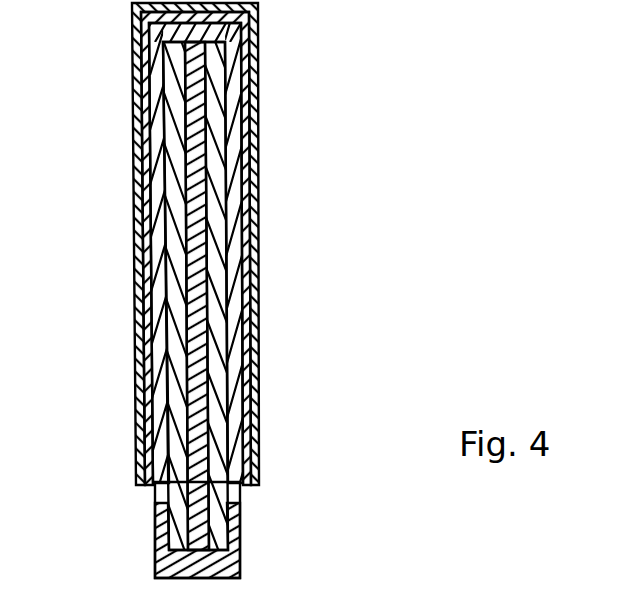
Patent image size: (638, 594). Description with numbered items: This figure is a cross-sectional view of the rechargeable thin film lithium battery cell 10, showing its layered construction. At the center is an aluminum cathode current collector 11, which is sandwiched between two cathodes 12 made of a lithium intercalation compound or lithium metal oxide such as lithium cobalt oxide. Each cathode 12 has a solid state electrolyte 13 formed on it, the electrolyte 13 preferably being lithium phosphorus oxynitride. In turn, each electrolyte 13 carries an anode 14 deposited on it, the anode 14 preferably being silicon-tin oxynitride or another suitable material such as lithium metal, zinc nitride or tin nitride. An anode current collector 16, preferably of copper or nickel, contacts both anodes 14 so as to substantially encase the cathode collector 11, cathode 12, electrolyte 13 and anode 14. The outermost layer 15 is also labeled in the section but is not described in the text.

The thin film lithium battery cell 10 is at (434, 159).
The cathode current collector 11 is at (205, 72).
The cathode 12 is at (212, 118).
The solid state electrolyte 13 is at (232, 188).
The anode 14 is at (246, 232).
The outer shell 15 is at (256, 283).
The anode current collector 16 is at (238, 568).